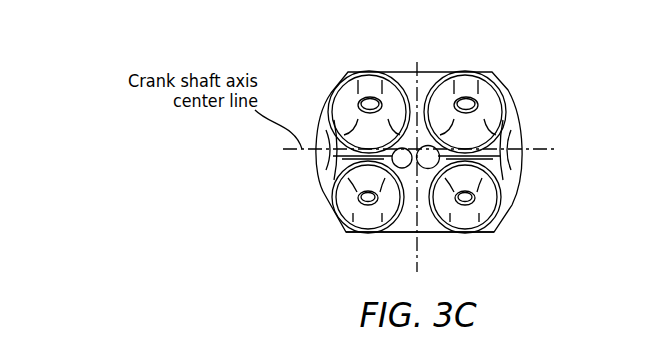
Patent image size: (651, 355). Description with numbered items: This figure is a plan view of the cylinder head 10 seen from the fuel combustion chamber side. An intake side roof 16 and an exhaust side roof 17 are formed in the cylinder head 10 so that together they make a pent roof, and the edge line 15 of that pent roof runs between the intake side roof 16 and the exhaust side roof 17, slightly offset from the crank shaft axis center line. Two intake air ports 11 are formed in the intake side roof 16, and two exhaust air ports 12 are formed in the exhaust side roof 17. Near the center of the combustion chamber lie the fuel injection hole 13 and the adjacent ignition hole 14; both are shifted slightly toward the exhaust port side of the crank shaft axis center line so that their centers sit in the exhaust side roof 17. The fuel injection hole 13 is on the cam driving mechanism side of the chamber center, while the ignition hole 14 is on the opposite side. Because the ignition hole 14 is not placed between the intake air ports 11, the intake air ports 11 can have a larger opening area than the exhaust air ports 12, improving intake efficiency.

The cylinder head 10 is at (327, 200).
The intake air ports 11 is at (351, 86).
The exhaust air ports 12 is at (362, 220).
The fuel injection hole 13 is at (404, 168).
The ignition hole 14 is at (425, 168).
The edge line of the pent roof 15 is at (332, 160).
The intake side roof 16 is at (427, 75).
The exhaust side roof 17 is at (444, 232).